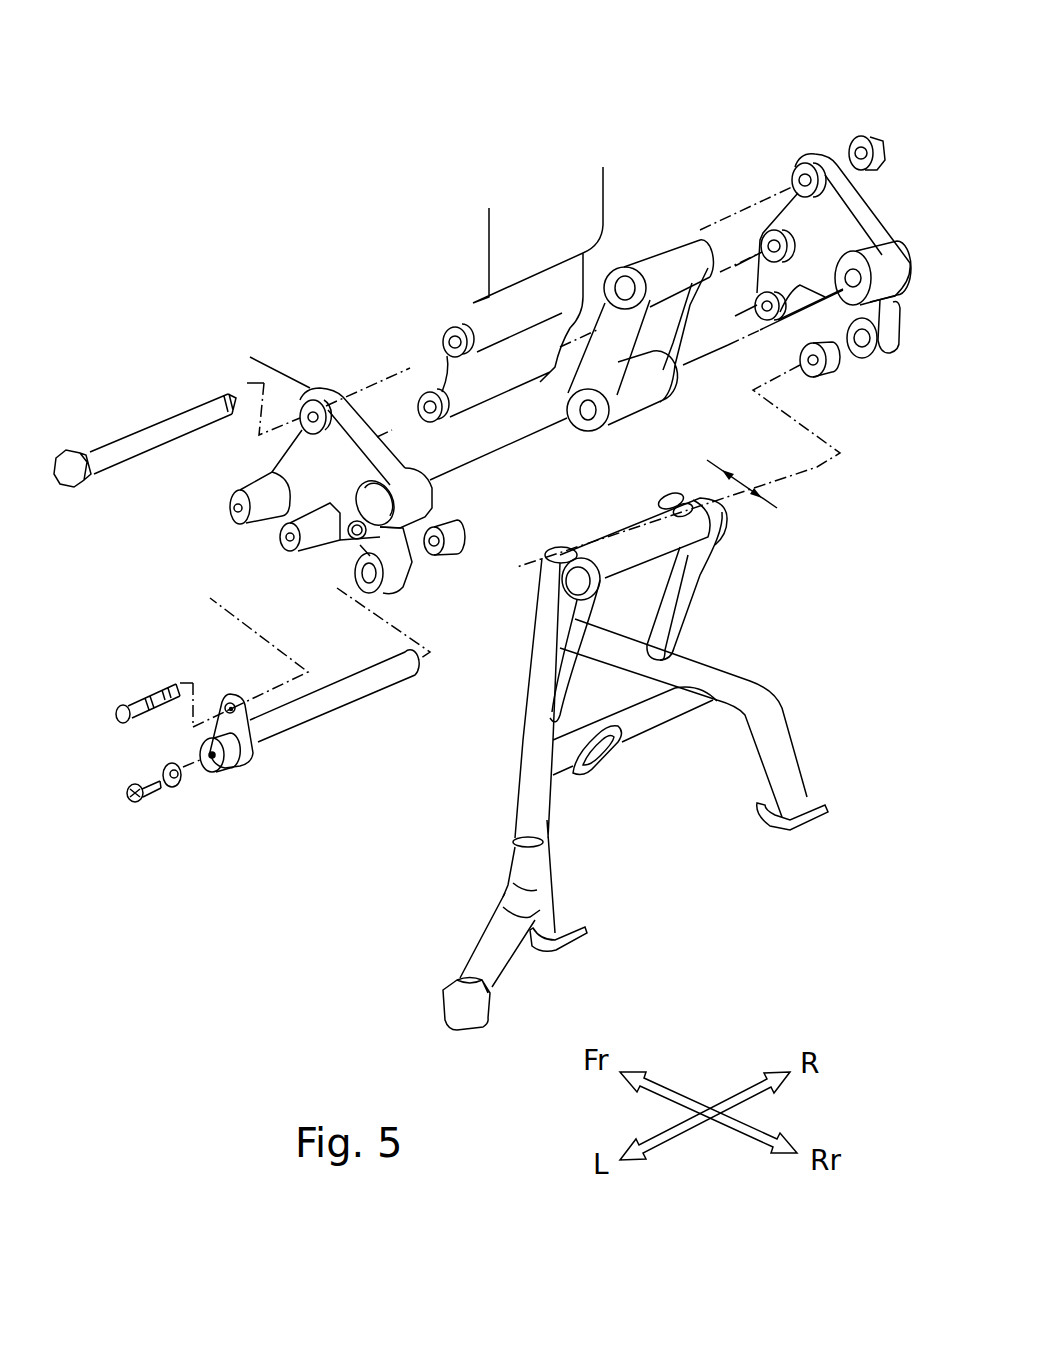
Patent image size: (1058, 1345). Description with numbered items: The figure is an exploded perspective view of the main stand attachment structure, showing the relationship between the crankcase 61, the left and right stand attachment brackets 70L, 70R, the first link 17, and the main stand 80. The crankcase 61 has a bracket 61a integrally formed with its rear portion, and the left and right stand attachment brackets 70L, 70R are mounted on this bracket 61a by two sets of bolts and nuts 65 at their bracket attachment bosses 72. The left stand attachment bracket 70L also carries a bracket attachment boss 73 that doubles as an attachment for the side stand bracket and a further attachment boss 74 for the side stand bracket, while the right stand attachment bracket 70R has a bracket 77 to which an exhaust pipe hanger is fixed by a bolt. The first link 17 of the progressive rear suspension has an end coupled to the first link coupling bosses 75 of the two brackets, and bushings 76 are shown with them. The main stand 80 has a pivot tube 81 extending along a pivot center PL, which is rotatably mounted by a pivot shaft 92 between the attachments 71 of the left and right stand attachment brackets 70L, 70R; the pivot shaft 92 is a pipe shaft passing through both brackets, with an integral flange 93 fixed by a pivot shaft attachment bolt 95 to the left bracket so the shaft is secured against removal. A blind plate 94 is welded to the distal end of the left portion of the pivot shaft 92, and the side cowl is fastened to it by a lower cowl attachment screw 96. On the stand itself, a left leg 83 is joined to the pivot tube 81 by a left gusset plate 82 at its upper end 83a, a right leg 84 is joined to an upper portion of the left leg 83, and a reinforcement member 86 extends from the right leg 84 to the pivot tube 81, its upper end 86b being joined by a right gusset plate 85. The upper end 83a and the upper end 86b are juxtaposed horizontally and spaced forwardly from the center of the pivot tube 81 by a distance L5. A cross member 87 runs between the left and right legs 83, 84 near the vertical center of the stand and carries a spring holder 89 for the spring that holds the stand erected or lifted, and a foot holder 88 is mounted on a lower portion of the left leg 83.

The first link 17 is at (660, 250).
The crankcase 61 is at (605, 192).
The bracket 61a is at (498, 378).
The bolts and nuts 65 is at (148, 430).
The left stand attachment bracket 70L is at (276, 392).
The right stand attachment bracket 70R is at (589, 328).
The attachments 71 is at (892, 356).
The bracket attachment bosses 72 is at (798, 175).
The bracket attachment boss 73 is at (232, 495).
The attachment boss 74 is at (280, 545).
The first link coupling bosses 75 is at (877, 253).
The bushings 76 is at (833, 365).
The bracket 77 is at (742, 320).
The main stand 80 is at (646, 733).
The pivot tube 81 is at (693, 530).
The left gusset plate 82 is at (530, 650).
The left leg 83 is at (533, 743).
The upper end 83a is at (557, 547).
The right leg 84 is at (773, 693).
The right gusset plate 85 is at (683, 567).
The reinforcement member 86 is at (653, 617).
The upper end 86b is at (668, 493).
The cross member 87 is at (667, 710).
The foot holder 88 is at (490, 953).
The spring holder 89 is at (625, 737).
The pivot shaft 92 is at (310, 720).
The flange 93 is at (225, 700).
The blind plate 94 is at (213, 763).
The pivot shaft attachment bolt 95 is at (120, 710).
The screw 96 is at (137, 803).
The distance L5 is at (745, 481).
The pivot center PL is at (817, 467).